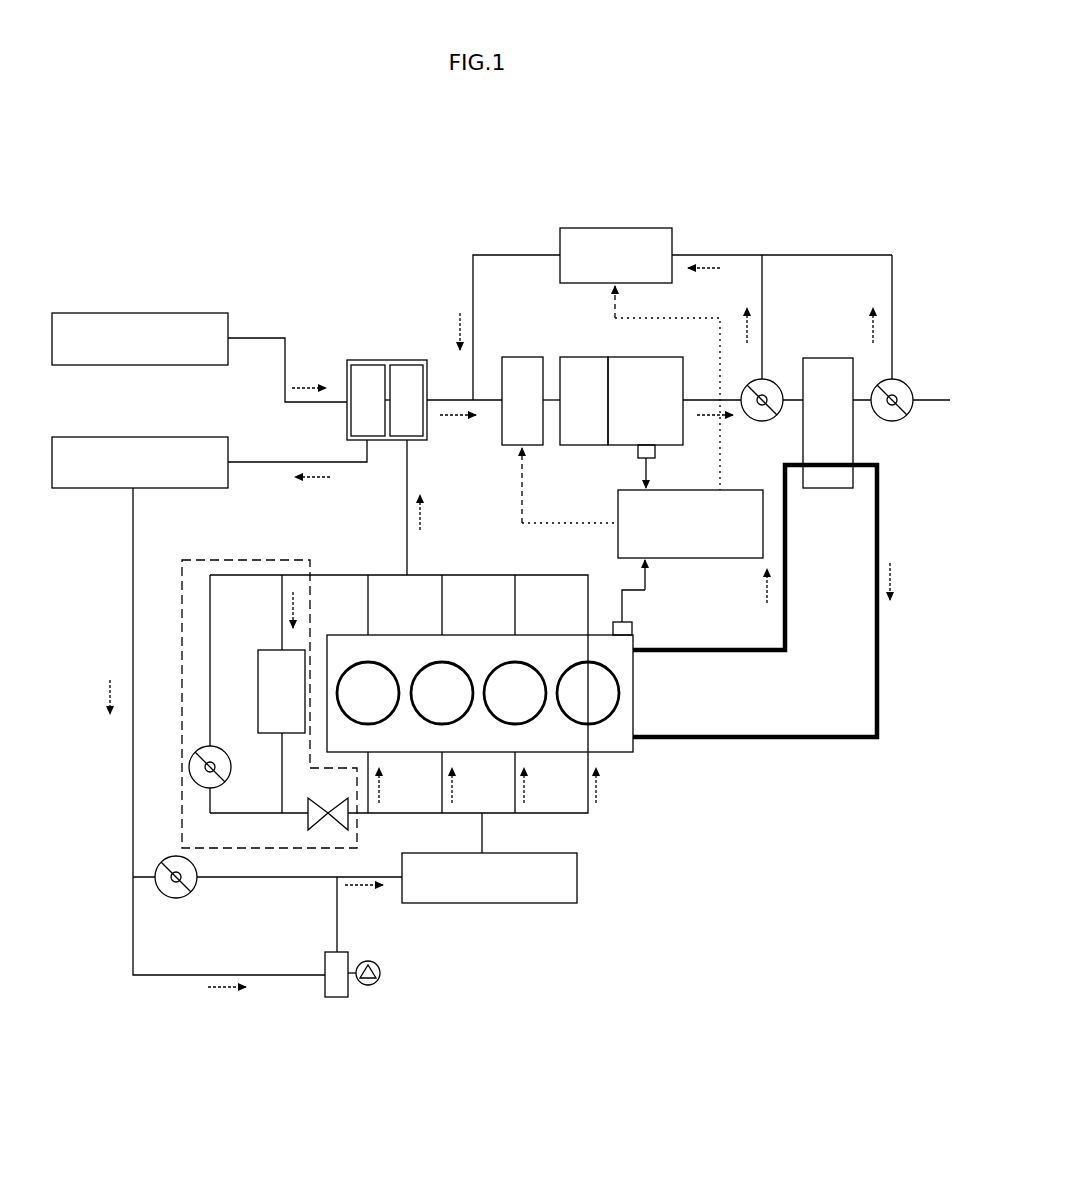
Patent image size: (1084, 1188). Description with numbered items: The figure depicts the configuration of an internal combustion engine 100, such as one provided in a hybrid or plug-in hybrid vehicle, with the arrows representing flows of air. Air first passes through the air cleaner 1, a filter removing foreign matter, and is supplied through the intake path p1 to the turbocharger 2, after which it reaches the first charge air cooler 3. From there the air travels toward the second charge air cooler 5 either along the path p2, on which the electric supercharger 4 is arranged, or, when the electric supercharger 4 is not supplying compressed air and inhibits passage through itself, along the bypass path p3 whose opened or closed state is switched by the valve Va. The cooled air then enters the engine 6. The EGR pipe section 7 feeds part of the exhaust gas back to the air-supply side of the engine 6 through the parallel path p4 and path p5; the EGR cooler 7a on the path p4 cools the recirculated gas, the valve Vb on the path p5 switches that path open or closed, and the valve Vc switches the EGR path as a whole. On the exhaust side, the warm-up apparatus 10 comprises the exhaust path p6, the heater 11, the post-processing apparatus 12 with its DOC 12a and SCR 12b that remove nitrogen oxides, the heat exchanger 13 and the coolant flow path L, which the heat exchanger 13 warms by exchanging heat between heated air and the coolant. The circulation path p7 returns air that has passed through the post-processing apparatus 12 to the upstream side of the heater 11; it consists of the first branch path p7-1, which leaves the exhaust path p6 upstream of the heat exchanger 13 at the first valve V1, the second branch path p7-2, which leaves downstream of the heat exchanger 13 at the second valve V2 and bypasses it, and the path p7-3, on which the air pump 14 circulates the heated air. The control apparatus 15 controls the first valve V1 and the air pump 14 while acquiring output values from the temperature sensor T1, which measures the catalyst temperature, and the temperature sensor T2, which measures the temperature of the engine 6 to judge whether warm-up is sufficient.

The internal combustion engine 100 is at (305, 167).
The air cleaner 1 is at (130, 313).
The turbocharger 2 is at (378, 360).
The first charge air cooler 3 is at (164, 435).
The electric supercharger 4 is at (381, 969).
The second charge air cooler 5 is at (522, 904).
The engine 6 is at (634, 754).
The EGR pipe section 7 is at (236, 554).
The EGR cooler 7a is at (262, 650).
The warm-up apparatus 10 is at (848, 223).
The heater 11 is at (522, 357).
The post-processing apparatus 12 is at (620, 411).
The DOC 12a is at (598, 357).
The SCR 12b is at (648, 357).
The heat exchanger 13 is at (826, 490).
The air pump 14 is at (574, 228).
The control apparatus 15 is at (697, 559).
The coolant flow path L is at (878, 505).
The temperature sensor T1 is at (655, 452).
The temperature sensor T2 is at (632, 625).
The first valve V1 is at (768, 378).
The second valve V2 is at (898, 378).
The valve Va is at (178, 898).
The valve Vb is at (200, 752).
The valve Vc is at (308, 822).
The intake path p1 is at (265, 340).
The path p2 is at (287, 978).
The path p3 is at (280, 880).
The path p4 is at (282, 752).
The path p5 is at (210, 665).
The exhaust path p6 is at (492, 402).
The circulation path p7 is at (493, 250).
The first branch path p7-1 is at (763, 305).
The second branch path p7-2 is at (893, 305).
The path p7-3 is at (734, 255).